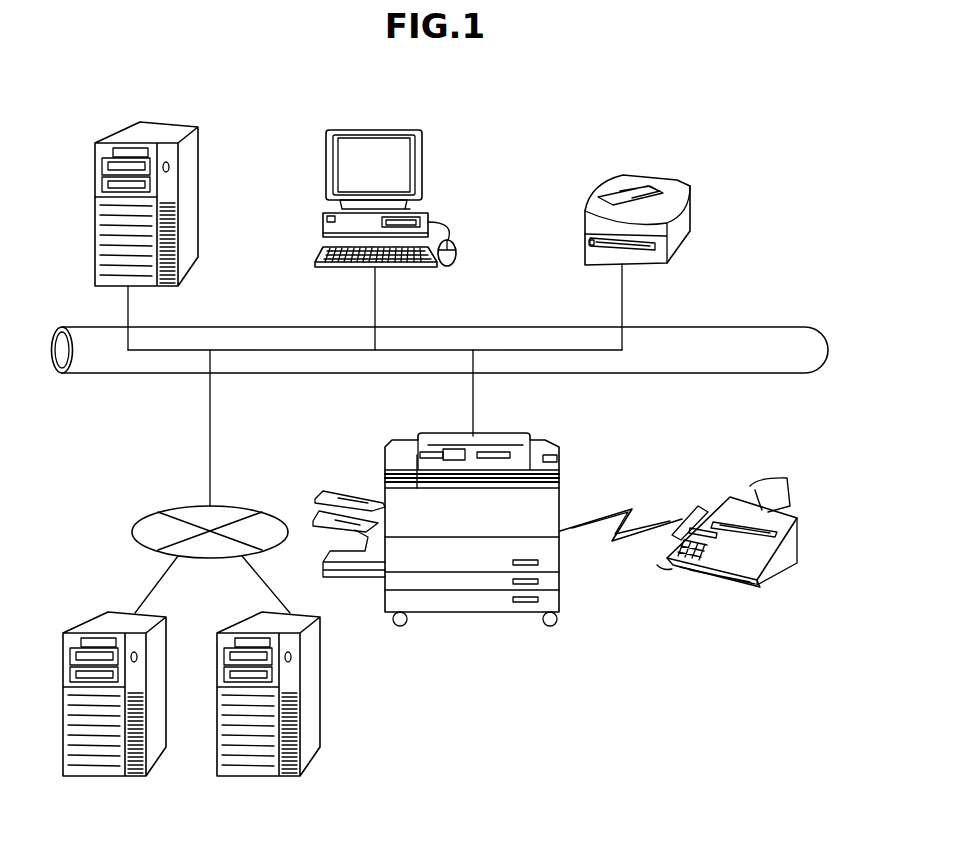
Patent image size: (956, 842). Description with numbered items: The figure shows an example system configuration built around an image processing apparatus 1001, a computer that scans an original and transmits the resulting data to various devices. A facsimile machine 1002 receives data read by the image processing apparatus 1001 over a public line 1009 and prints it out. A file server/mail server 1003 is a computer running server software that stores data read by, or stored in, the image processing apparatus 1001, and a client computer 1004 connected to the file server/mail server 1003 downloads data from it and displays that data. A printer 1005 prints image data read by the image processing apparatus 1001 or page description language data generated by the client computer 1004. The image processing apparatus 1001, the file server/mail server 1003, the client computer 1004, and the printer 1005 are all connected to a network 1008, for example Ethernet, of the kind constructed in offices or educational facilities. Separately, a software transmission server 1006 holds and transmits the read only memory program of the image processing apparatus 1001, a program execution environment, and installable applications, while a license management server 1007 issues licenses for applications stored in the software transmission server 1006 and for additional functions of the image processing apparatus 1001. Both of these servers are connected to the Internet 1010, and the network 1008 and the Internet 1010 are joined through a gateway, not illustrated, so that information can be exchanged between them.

The image processing apparatus 1001 is at (515, 433).
The facsimile machine 1002 is at (716, 586).
The file server/mail server 1003 is at (198, 172).
The client computer 1004 is at (425, 168).
The printer 1005 is at (691, 215).
The software transmission server 1006 is at (112, 612).
The license management server 1007 is at (322, 693).
The network 1008 is at (737, 326).
The public line 1009 is at (628, 508).
The Internet 1010 is at (253, 506).